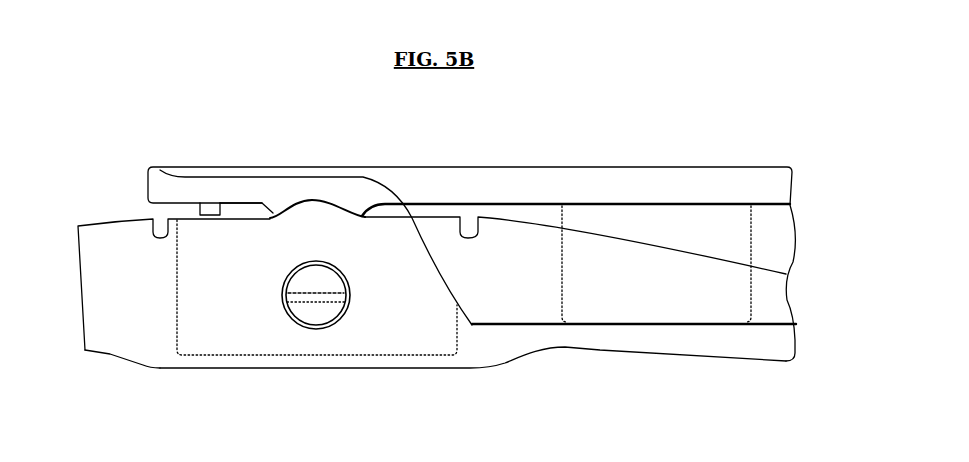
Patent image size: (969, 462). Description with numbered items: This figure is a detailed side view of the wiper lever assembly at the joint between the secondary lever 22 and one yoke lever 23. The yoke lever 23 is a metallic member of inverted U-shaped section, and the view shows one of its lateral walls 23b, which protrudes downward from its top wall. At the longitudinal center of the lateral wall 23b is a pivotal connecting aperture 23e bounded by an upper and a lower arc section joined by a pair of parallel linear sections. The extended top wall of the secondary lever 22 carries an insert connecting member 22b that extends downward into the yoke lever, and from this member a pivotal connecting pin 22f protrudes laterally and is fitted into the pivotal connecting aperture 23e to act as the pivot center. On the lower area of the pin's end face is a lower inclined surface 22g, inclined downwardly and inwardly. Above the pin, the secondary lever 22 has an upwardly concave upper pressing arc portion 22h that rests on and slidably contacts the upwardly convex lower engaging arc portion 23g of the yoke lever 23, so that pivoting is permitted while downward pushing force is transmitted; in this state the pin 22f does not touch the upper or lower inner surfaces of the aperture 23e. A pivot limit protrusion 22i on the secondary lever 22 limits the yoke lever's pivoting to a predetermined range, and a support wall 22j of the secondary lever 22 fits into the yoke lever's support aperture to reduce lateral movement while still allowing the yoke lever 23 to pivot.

The secondary lever 22 is at (731, 166).
The yoke lever 23 is at (100, 219).
The insert connecting member 22b is at (216, 367).
The pivotal connecting pin 22f is at (320, 273).
The lower inclined surface 22g is at (303, 312).
The upper pressing arc portion 22h is at (314, 205).
The pivot limit protrusion 22i is at (208, 219).
The support wall 22j is at (632, 326).
The lateral wall 23b is at (112, 347).
The pivotal connecting aperture 23e is at (333, 308).
The lower engaging arc portion 23g is at (355, 208).